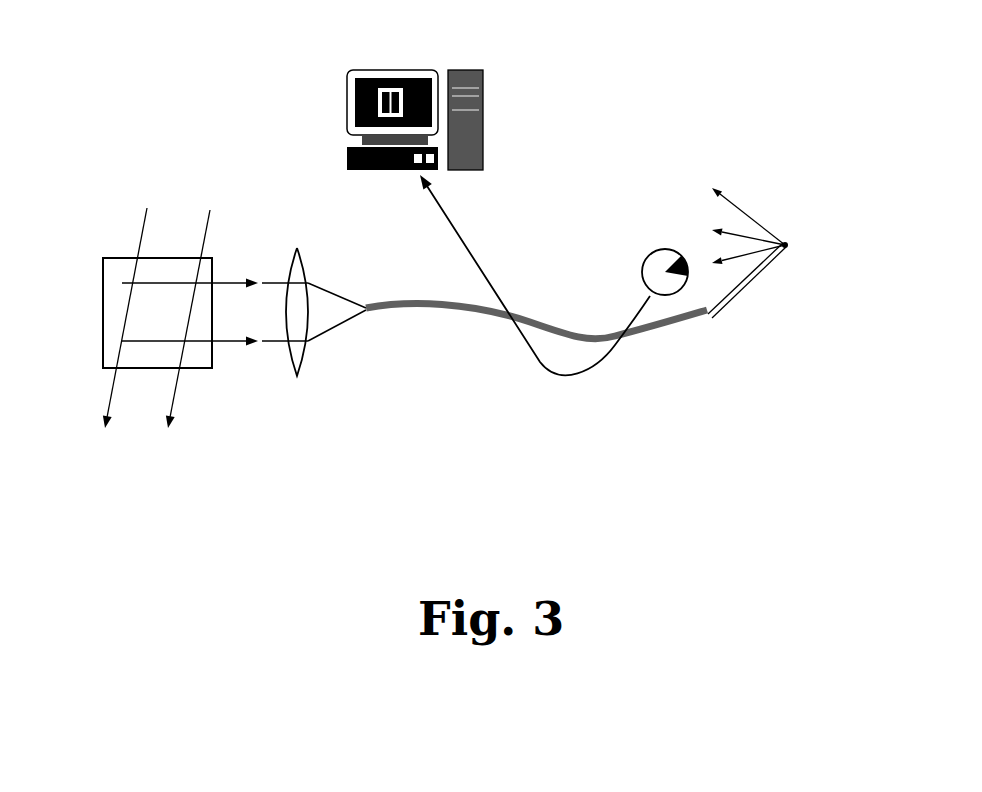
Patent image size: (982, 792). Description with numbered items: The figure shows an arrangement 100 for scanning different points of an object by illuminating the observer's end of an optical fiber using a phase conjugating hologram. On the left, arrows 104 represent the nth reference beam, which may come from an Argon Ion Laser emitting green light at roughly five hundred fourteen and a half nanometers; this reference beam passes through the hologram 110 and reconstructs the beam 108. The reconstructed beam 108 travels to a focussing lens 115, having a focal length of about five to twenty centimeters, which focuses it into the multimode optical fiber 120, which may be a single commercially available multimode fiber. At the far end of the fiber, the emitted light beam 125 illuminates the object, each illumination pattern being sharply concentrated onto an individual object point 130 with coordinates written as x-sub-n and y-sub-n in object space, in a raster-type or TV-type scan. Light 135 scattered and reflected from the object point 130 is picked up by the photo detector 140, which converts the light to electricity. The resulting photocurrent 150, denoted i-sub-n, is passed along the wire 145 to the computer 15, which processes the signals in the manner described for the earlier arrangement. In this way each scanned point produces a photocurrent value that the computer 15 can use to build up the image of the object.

The optical magnetic field sensing system 100 is at (238, 91).
The reference beam 104 is at (168, 233).
The reconstructed beam 108 is at (241, 326).
The hologram 110 is at (142, 315).
The focussing lens 115 is at (298, 247).
The multimode optical fiber 120 is at (390, 313).
The light beam 125 is at (735, 293).
The object point 130 is at (797, 253).
The scattered light 135 is at (727, 197).
The photo detector 140 is at (673, 250).
The wire 145 is at (447, 217).
The photocurrent 150 is at (397, 230).
The computer 15 is at (483, 133).